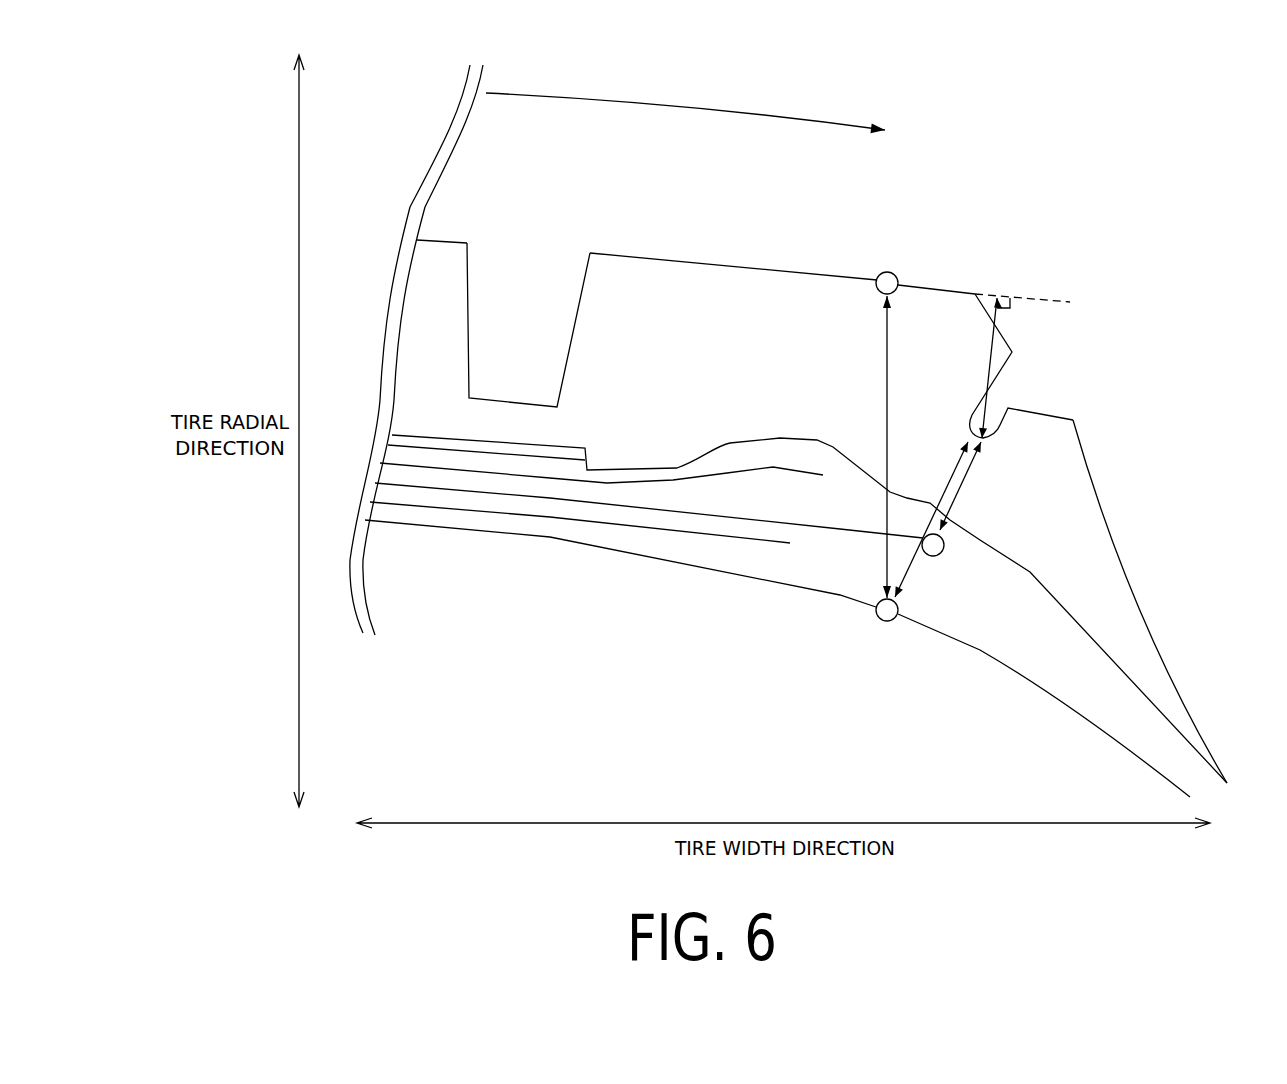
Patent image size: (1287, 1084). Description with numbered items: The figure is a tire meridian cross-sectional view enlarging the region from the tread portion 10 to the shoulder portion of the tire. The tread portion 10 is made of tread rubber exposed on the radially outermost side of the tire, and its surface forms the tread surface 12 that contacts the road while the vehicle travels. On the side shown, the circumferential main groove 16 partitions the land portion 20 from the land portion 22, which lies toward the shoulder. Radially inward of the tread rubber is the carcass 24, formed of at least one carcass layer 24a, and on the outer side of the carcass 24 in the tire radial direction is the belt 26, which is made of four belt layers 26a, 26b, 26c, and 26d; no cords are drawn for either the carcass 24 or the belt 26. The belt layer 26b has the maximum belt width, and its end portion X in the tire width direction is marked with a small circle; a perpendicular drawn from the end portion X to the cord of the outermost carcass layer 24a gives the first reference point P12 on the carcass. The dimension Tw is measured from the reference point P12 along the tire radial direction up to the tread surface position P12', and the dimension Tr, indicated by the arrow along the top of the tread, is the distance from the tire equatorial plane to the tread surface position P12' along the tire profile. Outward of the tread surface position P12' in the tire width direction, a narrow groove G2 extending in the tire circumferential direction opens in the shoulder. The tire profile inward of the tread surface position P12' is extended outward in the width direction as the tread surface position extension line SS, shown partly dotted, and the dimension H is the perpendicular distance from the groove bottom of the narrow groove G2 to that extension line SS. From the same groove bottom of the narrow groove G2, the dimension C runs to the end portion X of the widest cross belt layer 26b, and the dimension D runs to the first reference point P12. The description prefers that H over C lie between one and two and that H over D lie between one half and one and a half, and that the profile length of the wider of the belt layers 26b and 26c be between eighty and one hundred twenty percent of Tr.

The tread portion 10 is at (641, 222).
The tread surface 12 is at (727, 263).
The circumferential main groove 16 is at (522, 303).
The land portion 20 is at (445, 351).
The land portion 22 is at (782, 272).
The carcass 24 is at (777, 658).
The carcass layer 24a is at (1070, 702).
The belt 26 is at (798, 609).
The belt layer 26a is at (472, 685).
The belt layer 26b is at (665, 513).
The belt layer 26c is at (598, 483).
The belt layer 26d is at (550, 458).
The first reference point P12 is at (867, 622).
The tread surface position P12' is at (867, 271).
The tread surface position extension line SS is at (1062, 300).
The dimension H is at (988, 347).
The narrow groove G2 is at (998, 403).
The dimension Tw is at (887, 375).
The dimension D is at (931, 519).
The dimension C is at (960, 486).
The end portion X is at (940, 553).
The dimension Tr is at (700, 108).